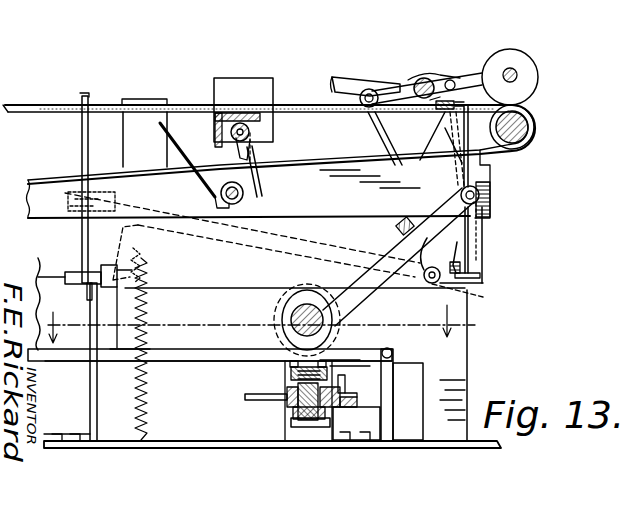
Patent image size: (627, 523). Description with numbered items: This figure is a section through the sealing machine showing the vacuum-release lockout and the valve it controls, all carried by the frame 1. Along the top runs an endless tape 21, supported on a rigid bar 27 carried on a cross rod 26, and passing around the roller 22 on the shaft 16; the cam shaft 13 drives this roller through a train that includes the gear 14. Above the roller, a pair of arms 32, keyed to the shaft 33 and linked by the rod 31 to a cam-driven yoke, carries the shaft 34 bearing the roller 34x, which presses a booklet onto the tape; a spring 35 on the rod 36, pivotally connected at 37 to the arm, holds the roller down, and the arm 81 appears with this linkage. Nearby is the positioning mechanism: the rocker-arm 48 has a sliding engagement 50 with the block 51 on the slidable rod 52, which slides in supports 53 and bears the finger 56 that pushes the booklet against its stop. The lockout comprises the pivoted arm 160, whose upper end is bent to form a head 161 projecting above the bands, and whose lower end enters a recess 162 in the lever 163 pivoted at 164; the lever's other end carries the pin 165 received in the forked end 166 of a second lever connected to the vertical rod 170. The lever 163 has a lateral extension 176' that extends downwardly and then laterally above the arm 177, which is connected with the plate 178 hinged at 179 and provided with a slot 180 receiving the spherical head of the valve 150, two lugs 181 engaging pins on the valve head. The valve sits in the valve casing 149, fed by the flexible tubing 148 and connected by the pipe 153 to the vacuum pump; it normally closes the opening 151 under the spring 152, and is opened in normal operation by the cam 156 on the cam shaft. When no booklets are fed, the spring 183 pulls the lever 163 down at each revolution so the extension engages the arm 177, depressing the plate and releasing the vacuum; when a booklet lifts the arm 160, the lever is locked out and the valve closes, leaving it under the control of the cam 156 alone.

The frame 1 is at (135, 99).
The cam shaft 13 is at (292, 318).
The gear 14 is at (398, 400).
The shaft 16 is at (530, 131).
The endless belt or tape 21 is at (35, 104).
The roller 22 is at (530, 110).
The cross rod 26 is at (442, 128).
The supporting bar 27 is at (47, 115).
The rod 31 is at (470, 94).
The arm 32 is at (462, 79).
The shaft 33 is at (427, 78).
The shaft 34 is at (518, 74).
The roller 34x is at (528, 62).
The spring 35 is at (398, 228).
The rod 36 is at (382, 138).
The pivot 37 is at (372, 88).
The rocker-arm 48 is at (246, 195).
The sliding engagement 50 is at (236, 152).
The block 51 is at (241, 122).
The slidable rod 52 is at (250, 131).
The support 53 is at (215, 130).
The finger or arm 56 is at (258, 80).
The arm 81 is at (352, 80).
The flexible tubing 148 is at (357, 403).
The valve casing 149 is at (287, 398).
The valve 150 is at (312, 428).
The opening 151 is at (293, 412).
The spring 152 is at (291, 374).
The pipe 153 is at (250, 394).
The cam 156 is at (336, 308).
The pivoted arm 160 is at (462, 182).
The head 161 is at (473, 144).
The recess 162 is at (458, 270).
The lever 163 is at (318, 244).
The pivot 164 is at (430, 285).
The pin 165 is at (92, 185).
The forked end 166 is at (84, 207).
The vertically extending rod 170 is at (89, 126).
The lateral extension 176' is at (144, 305).
The arm 177 is at (200, 349).
The plate 178 is at (262, 349).
The hinge 179 is at (395, 355).
The slot 180 is at (384, 348).
The lug 181 is at (290, 363).
The spring 183 is at (130, 277).